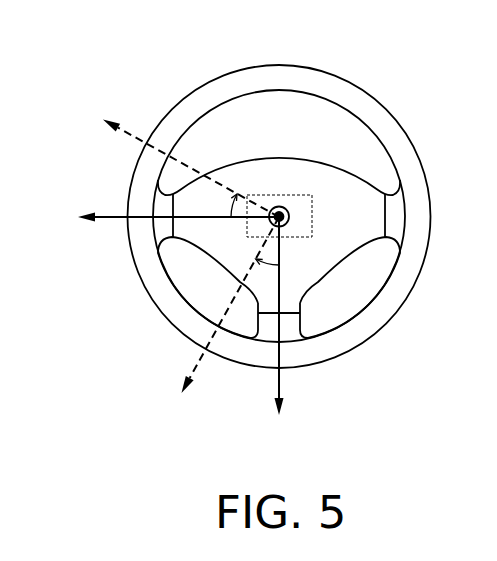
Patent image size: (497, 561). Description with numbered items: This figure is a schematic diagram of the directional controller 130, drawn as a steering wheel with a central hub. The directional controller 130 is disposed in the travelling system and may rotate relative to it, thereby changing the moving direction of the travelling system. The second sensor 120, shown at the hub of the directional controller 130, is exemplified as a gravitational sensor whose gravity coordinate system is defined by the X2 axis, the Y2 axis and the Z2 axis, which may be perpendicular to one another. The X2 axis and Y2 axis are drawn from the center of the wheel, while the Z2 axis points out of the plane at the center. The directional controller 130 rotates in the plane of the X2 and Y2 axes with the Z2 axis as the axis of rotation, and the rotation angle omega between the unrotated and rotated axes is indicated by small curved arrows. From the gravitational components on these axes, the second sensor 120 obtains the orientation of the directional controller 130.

The second sensor 120 is at (280, 195).
The directional controller 130 is at (357, 100).
The X2 axis X2 is at (163, 175).
The Y2 axis Y2 is at (237, 331).
The Z2 axis Z2 is at (289, 215).